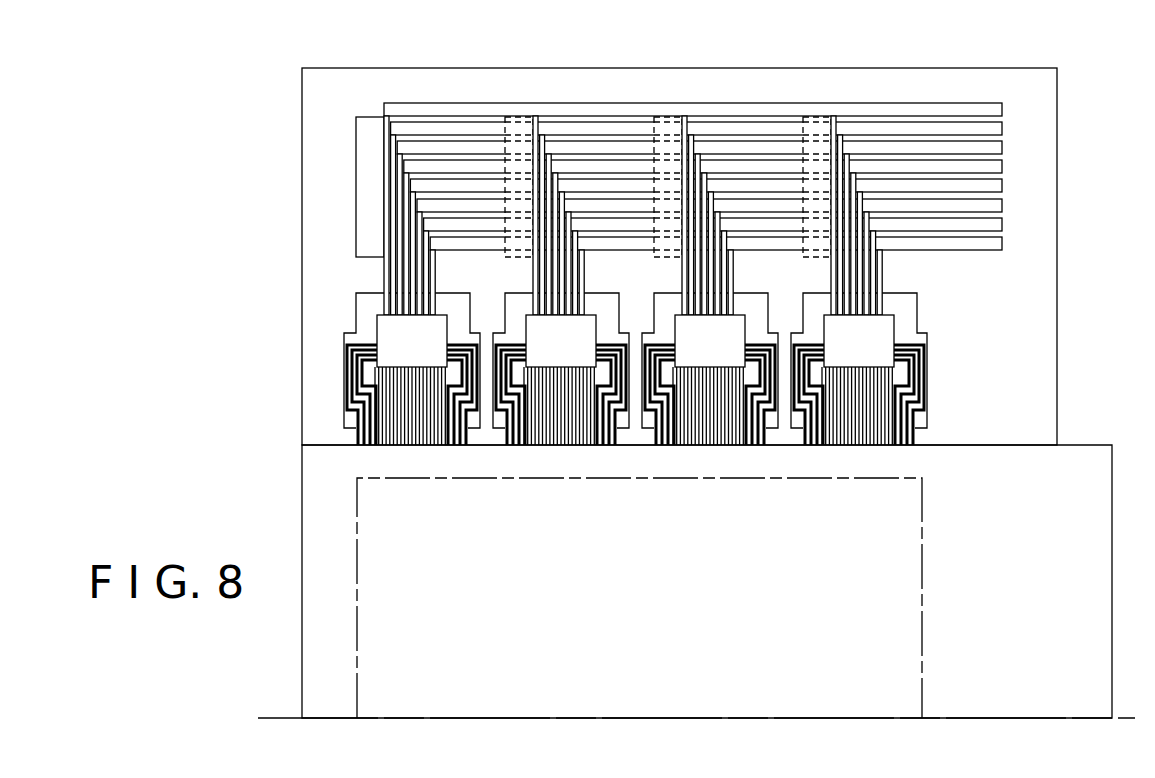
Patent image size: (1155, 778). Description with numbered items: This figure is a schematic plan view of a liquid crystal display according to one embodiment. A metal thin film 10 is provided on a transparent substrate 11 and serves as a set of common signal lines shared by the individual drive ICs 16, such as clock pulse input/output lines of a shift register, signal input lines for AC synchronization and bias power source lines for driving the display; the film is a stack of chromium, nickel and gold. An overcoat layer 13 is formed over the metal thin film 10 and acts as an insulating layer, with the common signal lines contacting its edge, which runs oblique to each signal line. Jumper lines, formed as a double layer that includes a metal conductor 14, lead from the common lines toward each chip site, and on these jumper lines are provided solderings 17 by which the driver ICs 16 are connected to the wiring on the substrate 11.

The metal thin film 10 is at (588, 130).
The transparent substrate 11 is at (1058, 606).
The overcoat layer 13 is at (521, 120).
The metal conductor 14 is at (396, 118).
The drive IC 16 is at (385, 333).
The soldering 17 is at (362, 299).